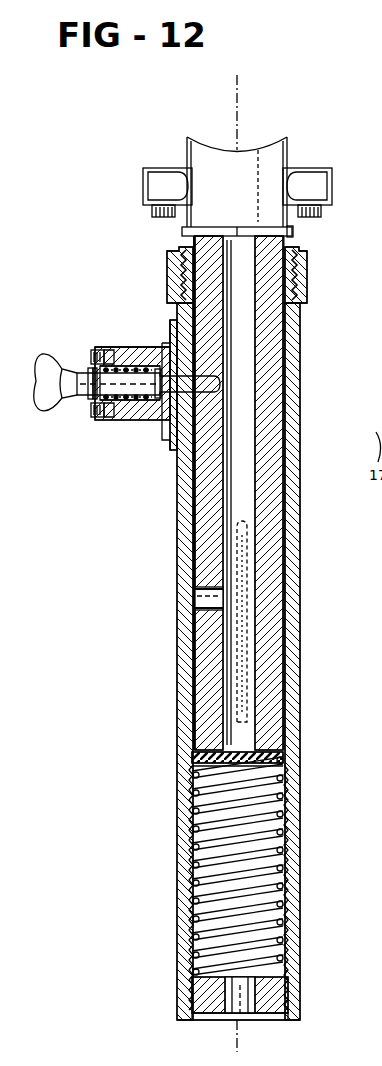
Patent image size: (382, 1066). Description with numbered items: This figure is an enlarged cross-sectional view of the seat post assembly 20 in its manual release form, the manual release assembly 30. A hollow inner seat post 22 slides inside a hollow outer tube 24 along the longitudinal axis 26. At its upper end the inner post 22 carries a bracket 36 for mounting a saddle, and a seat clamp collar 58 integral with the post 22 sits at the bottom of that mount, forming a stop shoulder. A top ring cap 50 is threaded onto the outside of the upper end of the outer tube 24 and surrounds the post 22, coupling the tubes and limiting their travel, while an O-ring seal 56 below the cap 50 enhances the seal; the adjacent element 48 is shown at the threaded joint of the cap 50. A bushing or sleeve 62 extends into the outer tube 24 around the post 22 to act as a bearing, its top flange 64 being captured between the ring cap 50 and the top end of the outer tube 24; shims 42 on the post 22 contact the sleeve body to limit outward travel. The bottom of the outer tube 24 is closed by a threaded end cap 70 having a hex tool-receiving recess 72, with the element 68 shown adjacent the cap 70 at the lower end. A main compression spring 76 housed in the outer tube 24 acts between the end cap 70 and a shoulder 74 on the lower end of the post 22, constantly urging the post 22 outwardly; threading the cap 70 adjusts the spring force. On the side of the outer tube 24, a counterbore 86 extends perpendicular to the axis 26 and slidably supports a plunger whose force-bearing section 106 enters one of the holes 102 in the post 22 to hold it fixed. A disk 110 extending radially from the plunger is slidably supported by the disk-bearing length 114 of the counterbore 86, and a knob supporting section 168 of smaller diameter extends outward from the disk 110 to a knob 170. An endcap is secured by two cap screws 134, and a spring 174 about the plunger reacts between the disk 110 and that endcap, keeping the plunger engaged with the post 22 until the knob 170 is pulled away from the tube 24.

The seat post assembly 20 is at (317, 648).
The inner seat post 22 is at (272, 324).
The outer tube 24 is at (296, 803).
The longitudinal axis 26 is at (224, 80).
The manual release assembly 30 is at (128, 428).
The bracket 36 is at (276, 158).
The shims 42 is at (247, 530).
The threaded collar 48 is at (307, 287).
The top ring cap 50 is at (307, 258).
The O-ring seal 56 is at (293, 233).
The seat clamp collar 58 is at (183, 232).
The bushing or sleeve 62 is at (170, 290).
The top flange 64 is at (170, 266).
The bottom plug 68 is at (293, 988).
The end cap 70 is at (288, 1014).
The tool-receiving recess 72 is at (246, 1013).
The shoulder or collar 74 is at (285, 758).
The main compression spring 76 is at (192, 845).
The counterbore 86 is at (119, 420).
The holes 102 is at (197, 600).
The force-bearing section 106 is at (218, 385).
The disk 110 is at (166, 421).
The disk-bearing length 114 is at (114, 345).
The cap screws 134 is at (96, 401).
The knob supporting section 168 is at (75, 368).
The knob 170 is at (50, 404).
The spring 174 is at (164, 350).